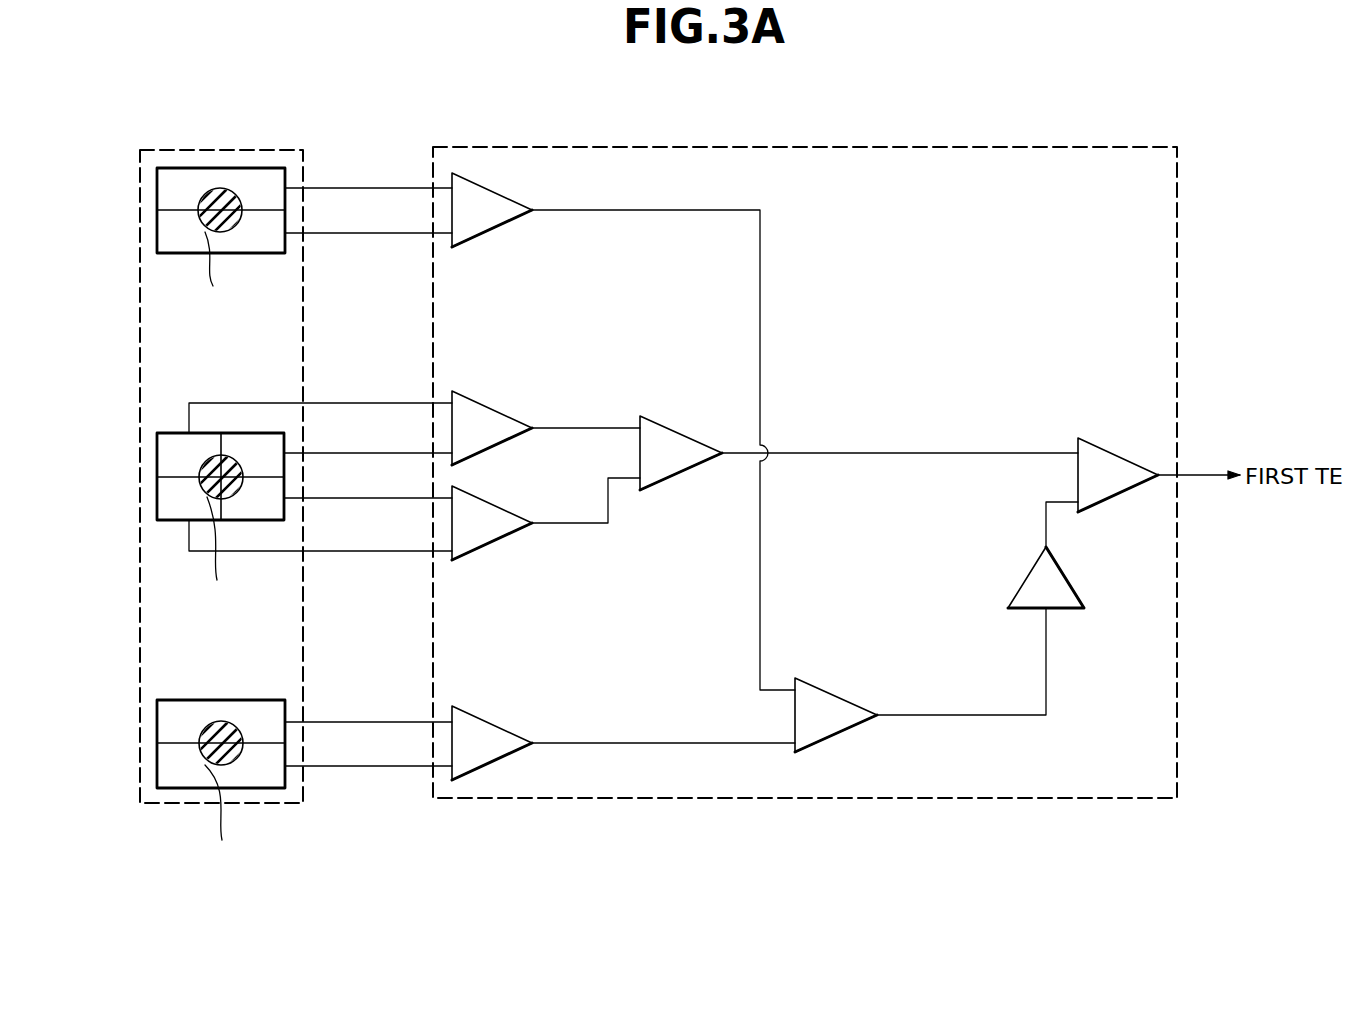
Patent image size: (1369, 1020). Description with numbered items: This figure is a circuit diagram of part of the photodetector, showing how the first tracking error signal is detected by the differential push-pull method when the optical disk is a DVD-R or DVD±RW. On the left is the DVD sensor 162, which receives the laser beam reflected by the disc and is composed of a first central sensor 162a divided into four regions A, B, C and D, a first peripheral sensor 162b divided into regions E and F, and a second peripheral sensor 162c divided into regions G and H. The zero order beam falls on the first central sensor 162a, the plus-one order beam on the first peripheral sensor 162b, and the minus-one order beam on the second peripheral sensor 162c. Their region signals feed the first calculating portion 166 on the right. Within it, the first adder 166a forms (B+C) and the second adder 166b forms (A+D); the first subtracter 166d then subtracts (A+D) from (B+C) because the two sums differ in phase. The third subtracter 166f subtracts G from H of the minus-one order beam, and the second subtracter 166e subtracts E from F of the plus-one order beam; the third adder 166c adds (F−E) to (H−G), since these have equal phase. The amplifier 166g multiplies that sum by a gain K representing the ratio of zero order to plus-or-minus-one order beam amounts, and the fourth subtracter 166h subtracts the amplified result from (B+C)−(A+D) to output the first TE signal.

The DVD sensor 162 is at (222, 150).
The first central sensor 162a is at (157, 477).
The first peripheral sensor 162b is at (157, 743).
The second peripheral sensor 162c is at (157, 210).
The first calculating portion 166 is at (851, 147).
The first adder 166a is at (494, 405).
The second adder 166b is at (494, 500).
The third adder 166c is at (836, 695).
The first subtracter 166d is at (683, 432).
The second subtracter 166e is at (494, 718).
The third subtracter 166f is at (494, 228).
The amplifier 166g is at (1067, 570).
The fourth subtracter 166h is at (1120, 455).